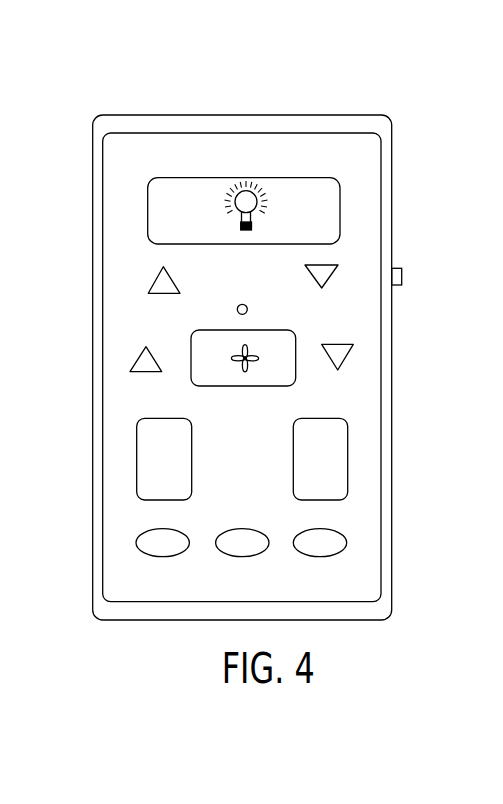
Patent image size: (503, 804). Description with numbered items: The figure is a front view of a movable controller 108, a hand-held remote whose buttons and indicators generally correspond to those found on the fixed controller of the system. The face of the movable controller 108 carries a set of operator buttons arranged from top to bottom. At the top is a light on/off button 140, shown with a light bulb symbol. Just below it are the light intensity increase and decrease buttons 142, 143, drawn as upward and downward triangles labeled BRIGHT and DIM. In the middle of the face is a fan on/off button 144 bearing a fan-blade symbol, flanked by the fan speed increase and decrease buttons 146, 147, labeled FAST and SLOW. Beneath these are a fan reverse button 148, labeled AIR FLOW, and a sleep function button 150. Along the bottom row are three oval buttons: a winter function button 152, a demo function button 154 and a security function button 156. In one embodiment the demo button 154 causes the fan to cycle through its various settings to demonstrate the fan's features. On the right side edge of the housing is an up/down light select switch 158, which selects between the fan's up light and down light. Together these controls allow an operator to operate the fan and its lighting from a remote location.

The movable controller 108 is at (242, 317).
The light on/off button 140 is at (183, 202).
The light intensity increase button 142 is at (104, 273).
The light intensity decrease button 143 is at (386, 266).
The fan on/off button 144 is at (169, 335).
The fan speed increase button 146 is at (99, 365).
The fan speed decrease button 147 is at (401, 345).
The fan reverse button 148 is at (111, 456).
The sleep function button 150 is at (388, 446).
The winter function button 152 is at (109, 543).
The demo function button 154 is at (183, 596).
The security function button 156 is at (381, 535).
The up/down light select switch 158 is at (435, 267).